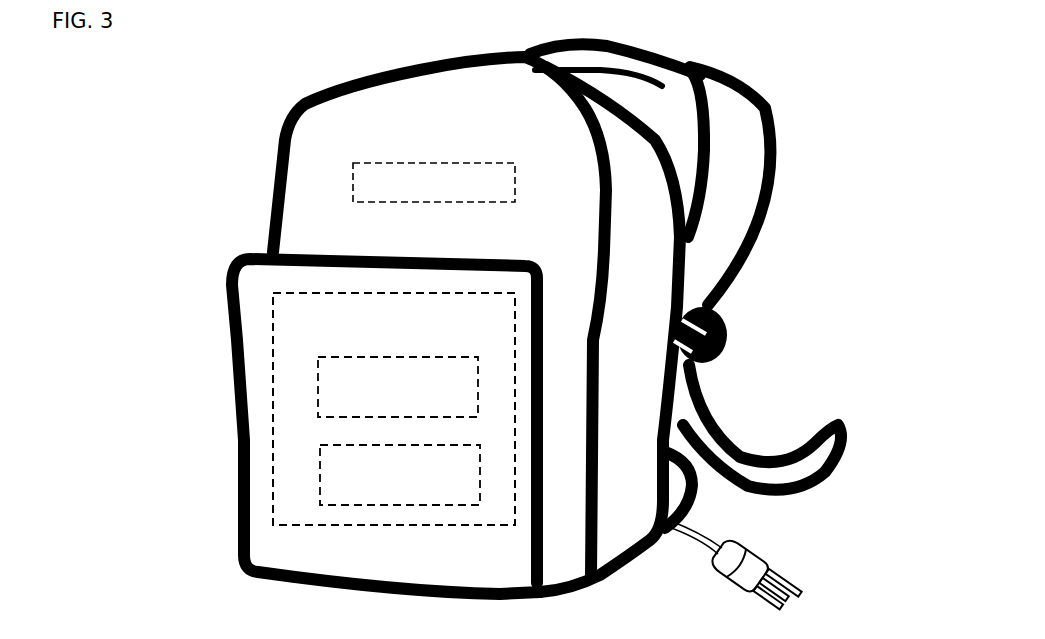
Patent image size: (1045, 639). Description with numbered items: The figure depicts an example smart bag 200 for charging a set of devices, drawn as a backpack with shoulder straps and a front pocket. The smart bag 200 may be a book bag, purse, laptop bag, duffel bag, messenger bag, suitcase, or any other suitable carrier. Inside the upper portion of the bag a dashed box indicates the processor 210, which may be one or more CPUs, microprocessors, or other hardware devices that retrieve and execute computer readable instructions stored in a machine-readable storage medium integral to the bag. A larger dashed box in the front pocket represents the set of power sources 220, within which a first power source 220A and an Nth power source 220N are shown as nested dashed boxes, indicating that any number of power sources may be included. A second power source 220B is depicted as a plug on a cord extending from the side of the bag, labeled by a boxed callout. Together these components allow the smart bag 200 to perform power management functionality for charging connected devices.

The smart bag 200 is at (236, 129).
The processor 210 is at (434, 182).
The set of power sources 220 is at (394, 409).
The first power source 220A is at (398, 387).
The Nth power source 220N is at (400, 475).
The second power source 220B is at (799, 562).